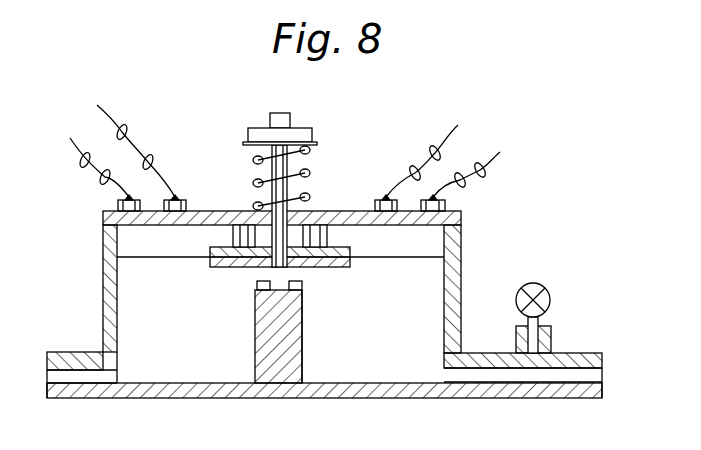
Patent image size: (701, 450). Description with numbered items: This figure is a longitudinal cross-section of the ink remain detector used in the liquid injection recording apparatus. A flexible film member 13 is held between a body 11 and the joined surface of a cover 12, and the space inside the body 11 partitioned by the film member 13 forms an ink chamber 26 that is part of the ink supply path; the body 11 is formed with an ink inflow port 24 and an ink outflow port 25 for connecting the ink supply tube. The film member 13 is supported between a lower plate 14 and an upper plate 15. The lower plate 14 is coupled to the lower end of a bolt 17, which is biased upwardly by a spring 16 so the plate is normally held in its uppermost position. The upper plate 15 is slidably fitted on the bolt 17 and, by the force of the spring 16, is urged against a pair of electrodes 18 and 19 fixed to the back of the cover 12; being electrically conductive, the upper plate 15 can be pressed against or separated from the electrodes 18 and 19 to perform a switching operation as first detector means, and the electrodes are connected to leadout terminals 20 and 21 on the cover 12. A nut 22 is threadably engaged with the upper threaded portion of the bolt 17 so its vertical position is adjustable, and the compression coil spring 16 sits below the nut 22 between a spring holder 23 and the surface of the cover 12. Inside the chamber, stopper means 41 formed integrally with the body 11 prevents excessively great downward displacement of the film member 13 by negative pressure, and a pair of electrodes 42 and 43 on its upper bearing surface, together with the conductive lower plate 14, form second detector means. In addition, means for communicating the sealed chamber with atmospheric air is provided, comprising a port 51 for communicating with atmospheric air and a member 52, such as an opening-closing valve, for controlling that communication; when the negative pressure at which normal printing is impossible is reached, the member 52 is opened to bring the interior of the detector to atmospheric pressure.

The body 11 is at (461, 296).
The cover 12 is at (461, 240).
The film member 13 is at (150, 258).
The lower plate 14 is at (328, 268).
The upper plate 15 is at (350, 247).
The spring 16 is at (252, 156).
The bolt 17 is at (280, 193).
The electrode 18 is at (314, 225).
The electrode 19 is at (236, 226).
The leadout terminal 20 is at (446, 203).
The leadout terminal 21 is at (117, 205).
The nut 22 is at (300, 130).
The spring holder 23 is at (318, 143).
The ink inflow port 24 is at (498, 372).
The ink outflow port 25 is at (78, 380).
The ink chamber 26 is at (398, 375).
The stopper means 41 is at (262, 330).
The electrode 42 is at (303, 290).
The electrode 43 is at (258, 284).
The valve block 51 is at (538, 342).
The member for controlling the communication with atmospheric air 52 is at (540, 288).